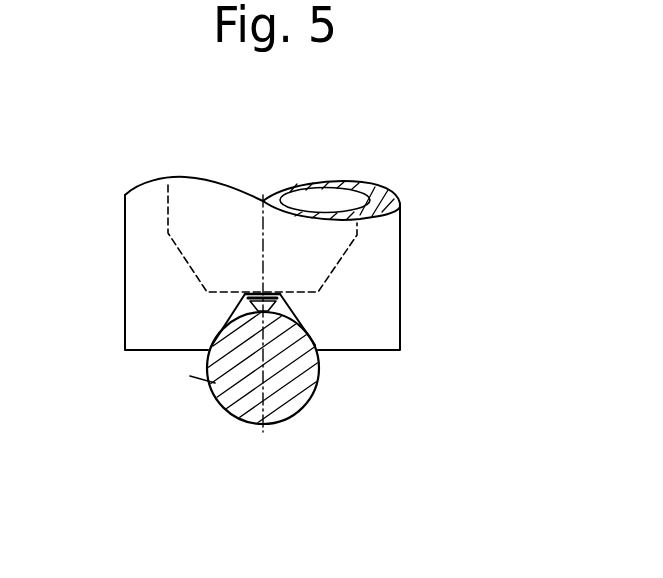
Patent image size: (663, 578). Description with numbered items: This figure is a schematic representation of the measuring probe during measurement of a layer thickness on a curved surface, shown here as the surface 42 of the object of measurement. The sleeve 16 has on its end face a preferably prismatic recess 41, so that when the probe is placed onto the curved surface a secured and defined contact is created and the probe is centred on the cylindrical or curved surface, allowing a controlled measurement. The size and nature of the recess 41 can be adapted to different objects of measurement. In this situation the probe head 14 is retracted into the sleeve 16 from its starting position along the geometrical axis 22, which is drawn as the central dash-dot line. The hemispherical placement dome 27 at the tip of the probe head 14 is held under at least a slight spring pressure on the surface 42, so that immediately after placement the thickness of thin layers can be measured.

The probe head 14 is at (352, 248).
The sleeve 16 is at (400, 305).
The geometrical axis 22 is at (264, 196).
The hemispherical placement dome 27 is at (246, 308).
The prismatic recess 41 is at (312, 343).
The surface of the object of measurement 42 is at (212, 379).